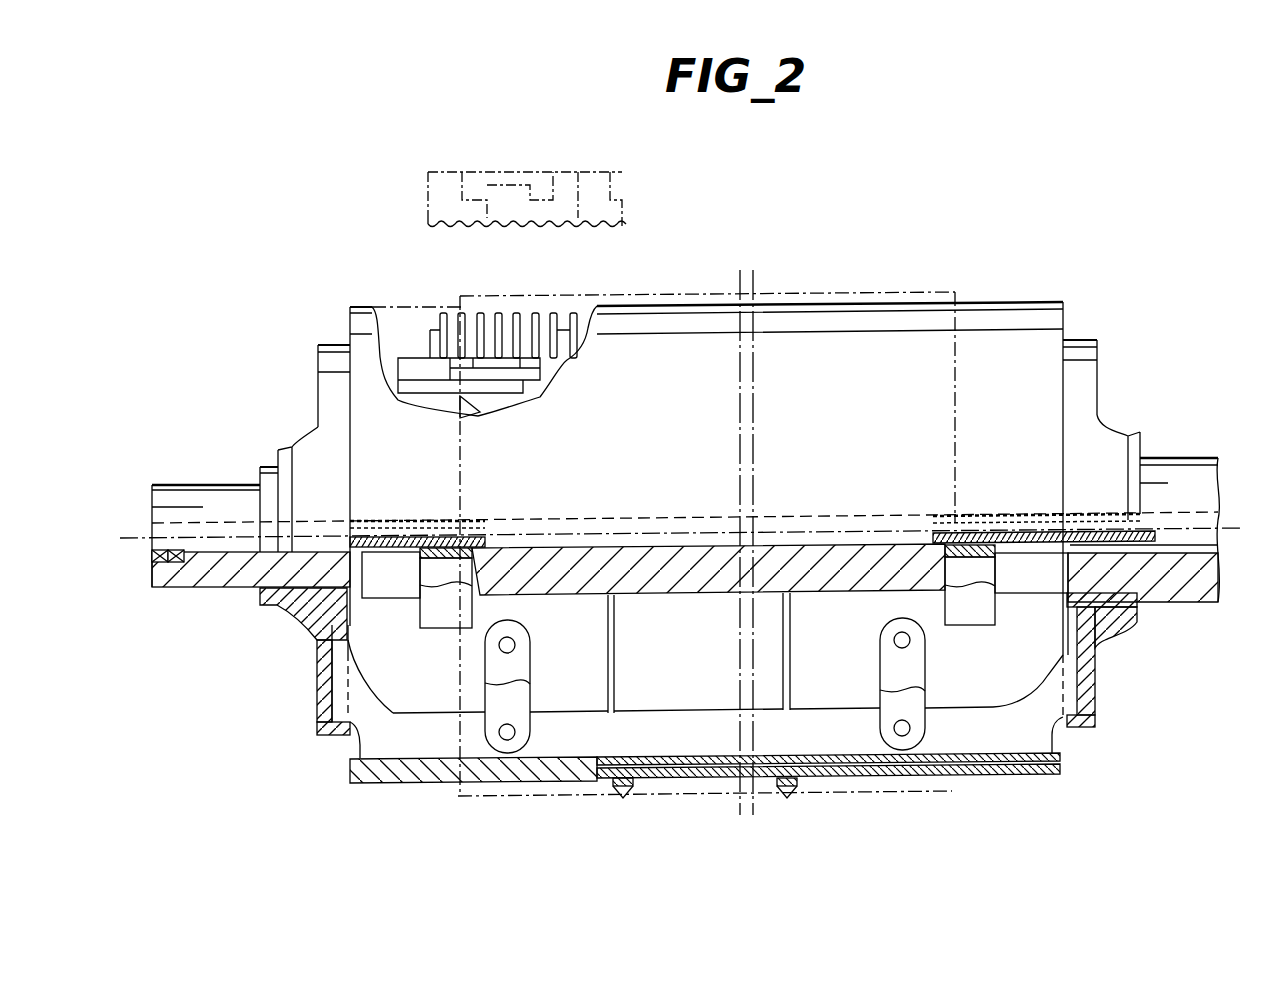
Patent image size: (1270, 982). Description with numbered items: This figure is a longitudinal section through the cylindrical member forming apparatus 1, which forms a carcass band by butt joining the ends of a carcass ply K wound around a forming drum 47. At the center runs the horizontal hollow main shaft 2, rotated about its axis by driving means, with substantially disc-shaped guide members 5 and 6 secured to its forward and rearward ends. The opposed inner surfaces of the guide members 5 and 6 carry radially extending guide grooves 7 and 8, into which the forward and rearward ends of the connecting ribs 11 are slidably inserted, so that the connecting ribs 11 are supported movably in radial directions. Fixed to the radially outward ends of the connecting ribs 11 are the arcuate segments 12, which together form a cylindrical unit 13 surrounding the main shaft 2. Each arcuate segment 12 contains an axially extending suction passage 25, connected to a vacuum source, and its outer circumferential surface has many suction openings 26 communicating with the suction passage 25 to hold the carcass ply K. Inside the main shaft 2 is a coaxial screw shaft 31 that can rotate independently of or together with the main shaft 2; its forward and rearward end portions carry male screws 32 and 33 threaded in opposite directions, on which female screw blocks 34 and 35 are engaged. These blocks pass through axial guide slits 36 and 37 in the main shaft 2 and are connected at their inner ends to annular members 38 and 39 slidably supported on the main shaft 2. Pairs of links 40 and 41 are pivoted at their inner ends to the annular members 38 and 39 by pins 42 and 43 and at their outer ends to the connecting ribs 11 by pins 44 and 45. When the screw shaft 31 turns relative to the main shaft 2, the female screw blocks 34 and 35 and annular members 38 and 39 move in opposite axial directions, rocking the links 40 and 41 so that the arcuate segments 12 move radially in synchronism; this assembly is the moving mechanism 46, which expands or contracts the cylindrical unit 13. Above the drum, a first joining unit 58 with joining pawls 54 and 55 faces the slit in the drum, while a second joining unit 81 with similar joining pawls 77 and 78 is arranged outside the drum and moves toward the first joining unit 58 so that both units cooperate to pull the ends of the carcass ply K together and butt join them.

The cylindrical member forming apparatus 1 is at (1090, 304).
The main shaft 2 is at (199, 578).
The guide member 5 is at (300, 622).
The guide member 6 is at (1120, 628).
The guide groove 7 is at (345, 643).
The guide groove 8 is at (1068, 641).
The connecting rib 11 is at (668, 718).
The arcuate segment 12 is at (468, 798).
The cylindrical unit 13 is at (368, 785).
The suction passage 25 is at (858, 786).
The suction opening 26 is at (620, 786).
The screw shaft 31 is at (1222, 546).
The male screw 32 is at (408, 535).
The male screw 33 is at (1010, 530).
The female screw block 34 is at (440, 622).
The female screw block 35 is at (978, 622).
The guide slit 36 is at (393, 590).
The guide slit 37 is at (1022, 578).
The annular member 38 is at (537, 681).
The annular member 39 is at (870, 676).
The link 40 is at (535, 688).
The link 41 is at (870, 685).
The pin 42 is at (516, 645).
The pin 43 is at (894, 643).
The pin 44 is at (516, 735).
The pin 45 is at (894, 730).
The moving mechanism 46 is at (992, 690).
The forming drum 47 is at (1052, 781).
The joining pawl 54 is at (501, 326).
The joining pawl 55 is at (545, 316).
The first joining unit 58 is at (484, 362).
The joining pawl 77 is at (573, 206).
The joining pawl 78 is at (628, 224).
The second joining unit 81 is at (573, 188).
The carcass ply K is at (893, 294).